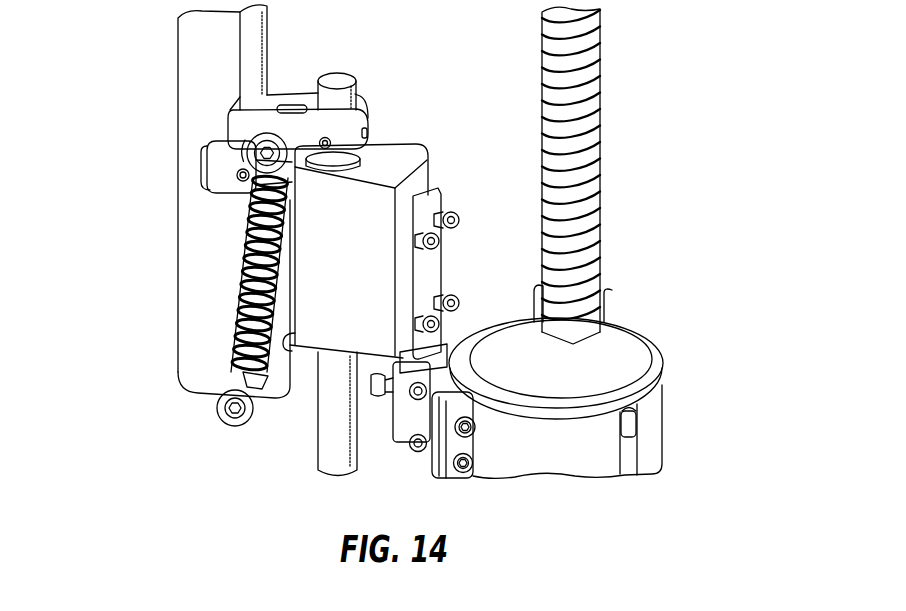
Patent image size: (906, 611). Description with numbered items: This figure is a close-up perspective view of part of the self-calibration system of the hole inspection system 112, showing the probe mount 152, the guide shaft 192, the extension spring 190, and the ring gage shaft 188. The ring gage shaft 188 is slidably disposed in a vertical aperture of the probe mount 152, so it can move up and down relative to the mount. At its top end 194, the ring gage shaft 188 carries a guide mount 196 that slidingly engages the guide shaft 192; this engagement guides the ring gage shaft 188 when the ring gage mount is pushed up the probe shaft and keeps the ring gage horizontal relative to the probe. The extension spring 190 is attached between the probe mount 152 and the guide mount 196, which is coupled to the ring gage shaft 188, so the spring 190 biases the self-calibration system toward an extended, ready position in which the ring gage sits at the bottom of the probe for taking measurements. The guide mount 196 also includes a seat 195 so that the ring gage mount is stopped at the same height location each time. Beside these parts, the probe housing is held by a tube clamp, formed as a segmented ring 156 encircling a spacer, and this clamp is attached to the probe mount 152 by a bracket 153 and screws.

The threaded rod 112 is at (587, 133).
The probe mount 152 is at (202, 266).
The bracket 153 is at (433, 267).
The ring 156 is at (643, 446).
The ring gage shaft 188 is at (335, 443).
The extension spring 190 is at (233, 322).
The guide shaft 192 is at (250, 52).
The top end 194 is at (355, 82).
The seat 195 is at (390, 143).
The guide mount 196 is at (230, 126).